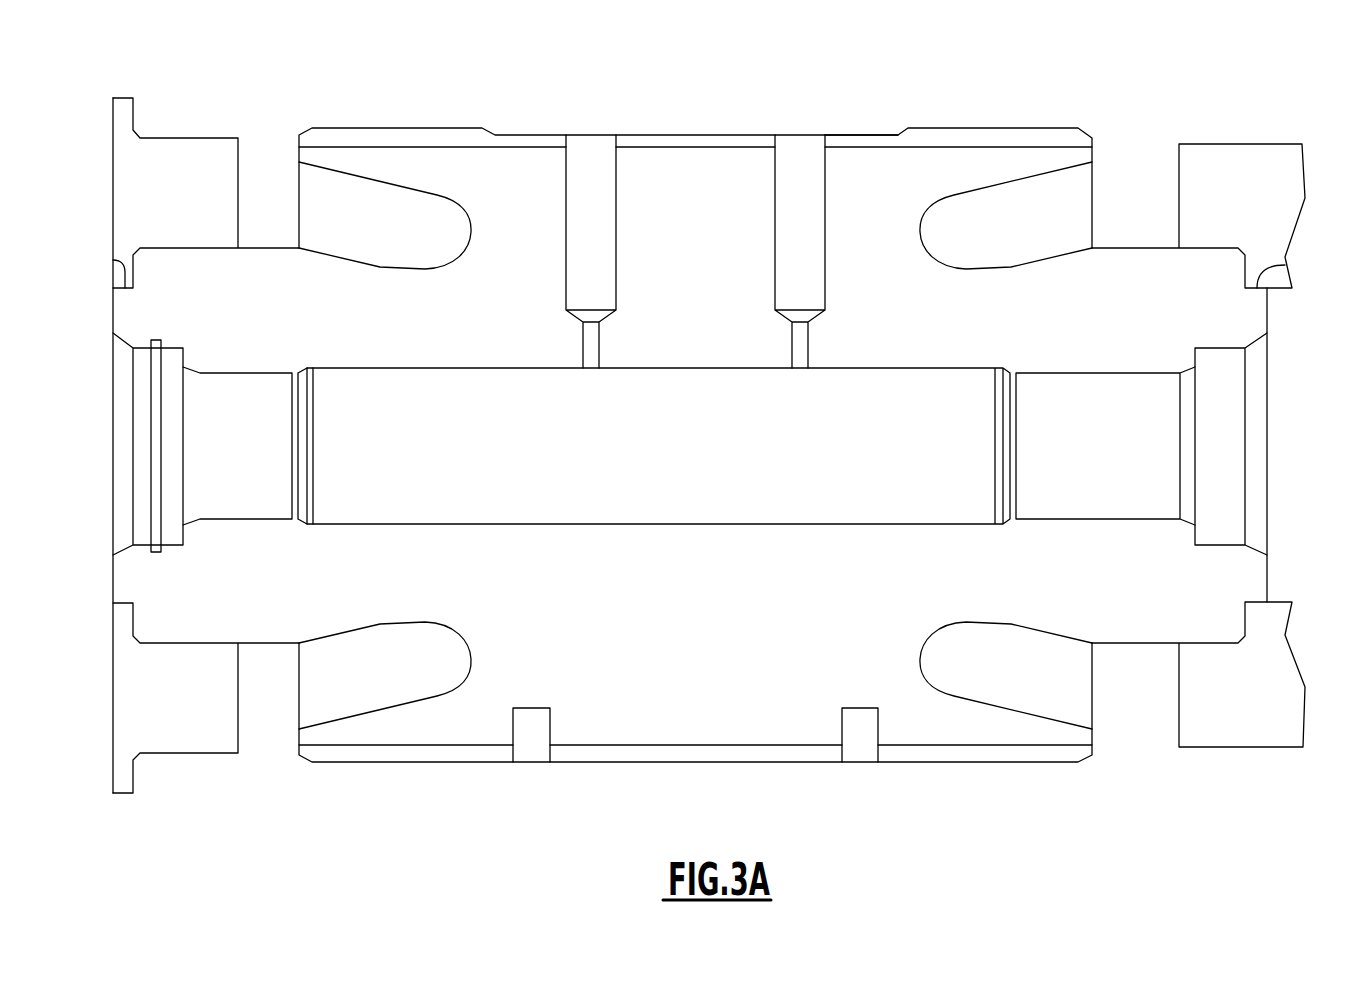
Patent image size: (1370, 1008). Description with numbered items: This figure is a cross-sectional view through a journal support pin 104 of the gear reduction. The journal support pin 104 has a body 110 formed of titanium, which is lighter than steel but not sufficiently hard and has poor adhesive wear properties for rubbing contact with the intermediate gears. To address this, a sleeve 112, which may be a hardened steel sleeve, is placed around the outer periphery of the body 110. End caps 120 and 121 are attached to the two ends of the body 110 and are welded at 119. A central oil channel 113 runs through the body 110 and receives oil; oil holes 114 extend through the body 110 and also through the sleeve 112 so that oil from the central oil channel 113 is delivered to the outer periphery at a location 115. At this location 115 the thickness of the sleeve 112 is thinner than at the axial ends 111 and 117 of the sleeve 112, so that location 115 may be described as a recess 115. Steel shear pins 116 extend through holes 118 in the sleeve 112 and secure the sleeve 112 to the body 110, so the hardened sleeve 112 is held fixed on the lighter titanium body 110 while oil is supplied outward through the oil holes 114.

The journal support pin 104 is at (585, 97).
The journal support pin body 110 is at (960, 308).
The axial end of the sleeve 111 is at (420, 128).
The sleeve 112 is at (718, 135).
The central oil channel 113 is at (463, 461).
The oil holes 114 is at (795, 242).
The recess 115 is at (857, 135).
The steel shear pins 116 is at (532, 717).
The axial end of the sleeve 117 is at (975, 130).
The holes in the sleeve 118 is at (843, 755).
The weld 119 is at (118, 262).
The end cap 120 is at (143, 687).
The end cap 121 is at (1262, 680).